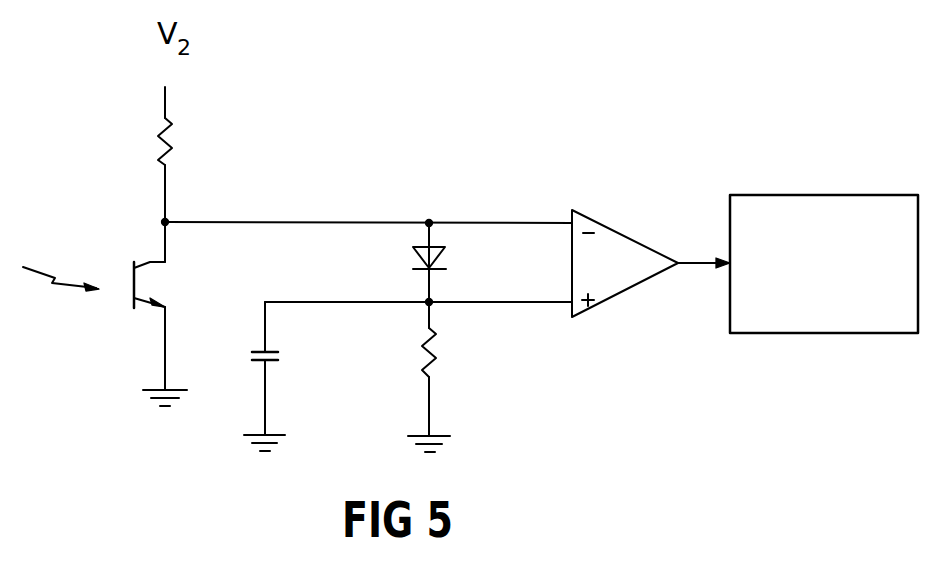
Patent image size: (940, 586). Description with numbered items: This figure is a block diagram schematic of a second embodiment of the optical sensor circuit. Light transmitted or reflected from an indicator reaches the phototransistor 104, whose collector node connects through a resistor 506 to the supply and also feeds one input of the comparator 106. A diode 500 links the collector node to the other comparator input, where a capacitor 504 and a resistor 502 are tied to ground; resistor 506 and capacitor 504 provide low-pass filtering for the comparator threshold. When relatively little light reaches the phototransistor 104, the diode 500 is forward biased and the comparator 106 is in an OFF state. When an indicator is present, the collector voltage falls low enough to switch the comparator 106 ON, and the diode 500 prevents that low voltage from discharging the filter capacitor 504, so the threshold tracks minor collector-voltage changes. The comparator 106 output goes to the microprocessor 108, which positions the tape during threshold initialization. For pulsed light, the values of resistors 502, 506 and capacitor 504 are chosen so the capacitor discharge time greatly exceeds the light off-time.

The phototransistor 104 is at (150, 261).
The comparator 106 is at (641, 278).
The microprocessor 108 is at (836, 322).
The diode 500 is at (412, 257).
The resistor 502 is at (440, 357).
The filter capacitor 504 is at (283, 359).
The resistor 506 is at (149, 135).